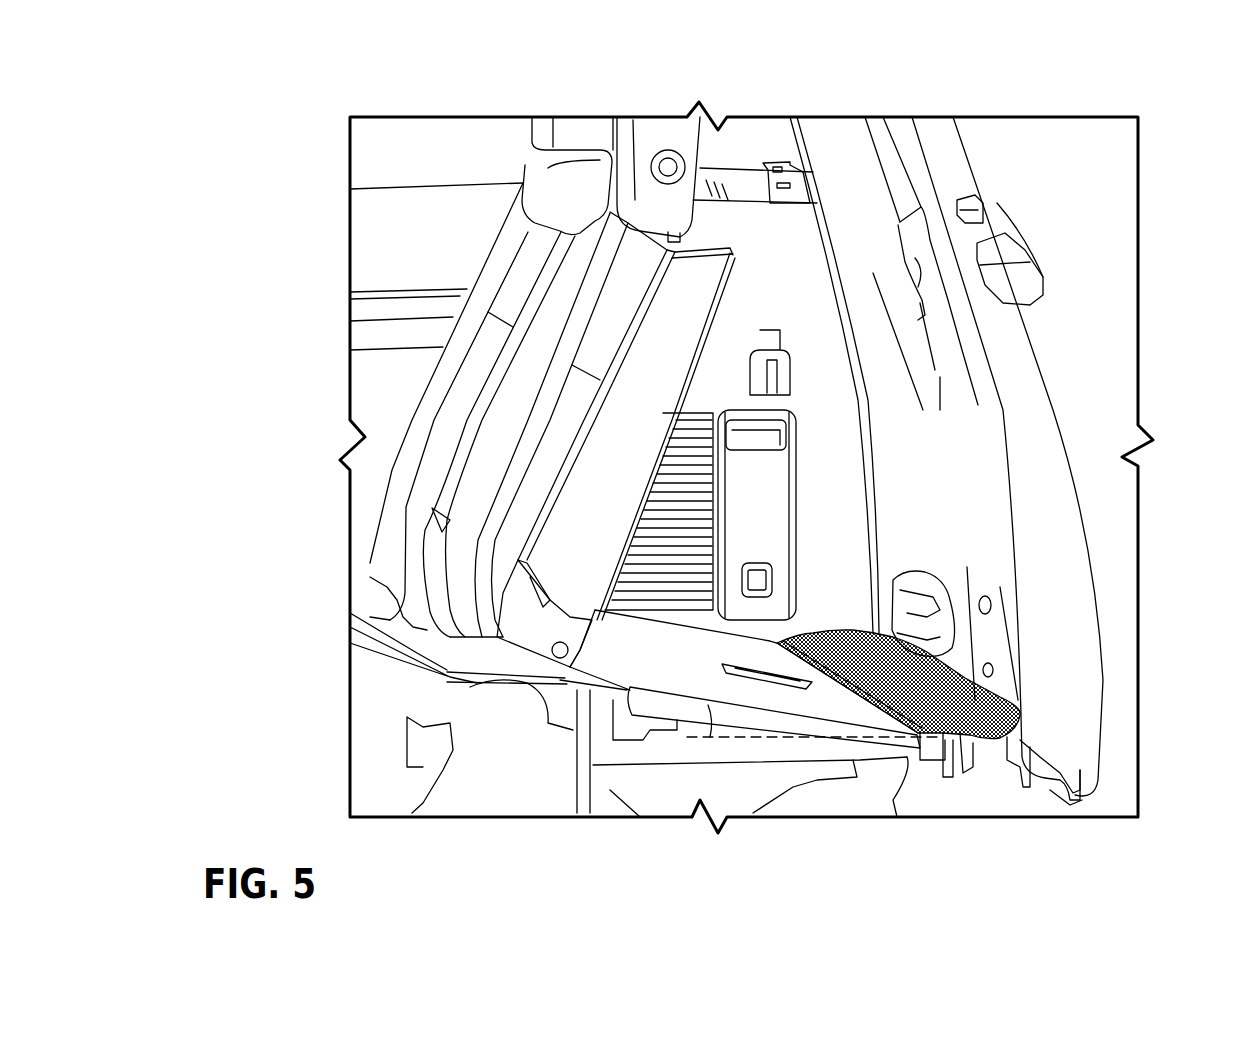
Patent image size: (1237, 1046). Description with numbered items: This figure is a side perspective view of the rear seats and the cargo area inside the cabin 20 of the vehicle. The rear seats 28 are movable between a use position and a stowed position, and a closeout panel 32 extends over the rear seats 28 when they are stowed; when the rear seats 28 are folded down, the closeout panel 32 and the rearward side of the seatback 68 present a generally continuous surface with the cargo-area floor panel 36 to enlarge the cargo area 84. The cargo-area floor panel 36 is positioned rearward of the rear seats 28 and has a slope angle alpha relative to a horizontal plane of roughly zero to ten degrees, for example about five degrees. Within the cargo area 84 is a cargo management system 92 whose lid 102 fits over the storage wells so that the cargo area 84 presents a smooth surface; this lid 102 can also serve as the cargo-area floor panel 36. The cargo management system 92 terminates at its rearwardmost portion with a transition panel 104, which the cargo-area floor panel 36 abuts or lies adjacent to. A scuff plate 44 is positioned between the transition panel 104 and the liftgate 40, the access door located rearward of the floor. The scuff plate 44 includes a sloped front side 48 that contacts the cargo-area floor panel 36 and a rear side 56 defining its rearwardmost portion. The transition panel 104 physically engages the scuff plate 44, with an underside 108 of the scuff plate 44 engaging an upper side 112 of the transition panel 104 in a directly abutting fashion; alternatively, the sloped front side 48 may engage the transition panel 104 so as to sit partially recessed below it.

The cabin 20 is at (280, 242).
The rear seats 28 is at (480, 274).
The closeout panel 32 is at (560, 710).
The cargo-area floor panel 36 is at (703, 672).
The liftgate 40 is at (918, 158).
The scuff plate 44 is at (958, 655).
The sloped front side 48 is at (968, 690).
The rear side 56 is at (1050, 790).
The seatback 68 is at (550, 510).
The cargo area 84 is at (792, 248).
The cargo management system 92 is at (665, 777).
The lid 102 is at (645, 682).
The transition panel 104 is at (927, 757).
The underside 108 is at (1040, 752).
The upper side 112 is at (851, 672).